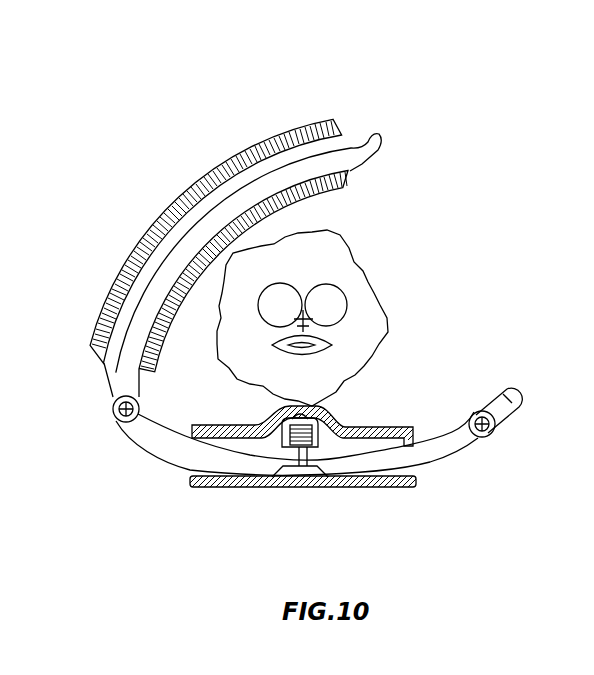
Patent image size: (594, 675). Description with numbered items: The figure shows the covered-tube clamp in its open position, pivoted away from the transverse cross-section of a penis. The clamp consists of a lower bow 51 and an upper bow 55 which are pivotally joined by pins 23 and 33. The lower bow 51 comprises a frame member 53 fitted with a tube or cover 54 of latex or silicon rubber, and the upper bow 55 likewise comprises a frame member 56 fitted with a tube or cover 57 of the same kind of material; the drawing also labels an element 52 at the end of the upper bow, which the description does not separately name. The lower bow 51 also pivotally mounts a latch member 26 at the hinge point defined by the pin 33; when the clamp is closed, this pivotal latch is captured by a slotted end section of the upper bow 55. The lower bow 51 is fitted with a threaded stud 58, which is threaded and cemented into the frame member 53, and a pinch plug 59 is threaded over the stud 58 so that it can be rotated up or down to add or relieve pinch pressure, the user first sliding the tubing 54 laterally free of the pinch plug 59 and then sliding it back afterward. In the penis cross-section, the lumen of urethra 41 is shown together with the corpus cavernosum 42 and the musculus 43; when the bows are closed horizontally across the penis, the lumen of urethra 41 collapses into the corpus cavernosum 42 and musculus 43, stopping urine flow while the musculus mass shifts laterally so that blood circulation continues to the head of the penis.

The pin 23 is at (115, 415).
The latch member 26 is at (508, 420).
The pin 33 is at (488, 430).
The lumen of urethra 41 is at (316, 345).
The corpus cavernosum 42 is at (333, 308).
The musculus 43 is at (326, 268).
The lower bow 51 is at (394, 490).
The retaining strip with hook 52 is at (366, 155).
The frame member 53 is at (158, 446).
The tube or cover 54 is at (213, 487).
The upper bow 55 is at (154, 212).
The frame member 56 is at (148, 310).
The tube or cover 57 is at (288, 130).
The threaded stud 58 is at (298, 483).
The pinch plug 59 is at (327, 424).